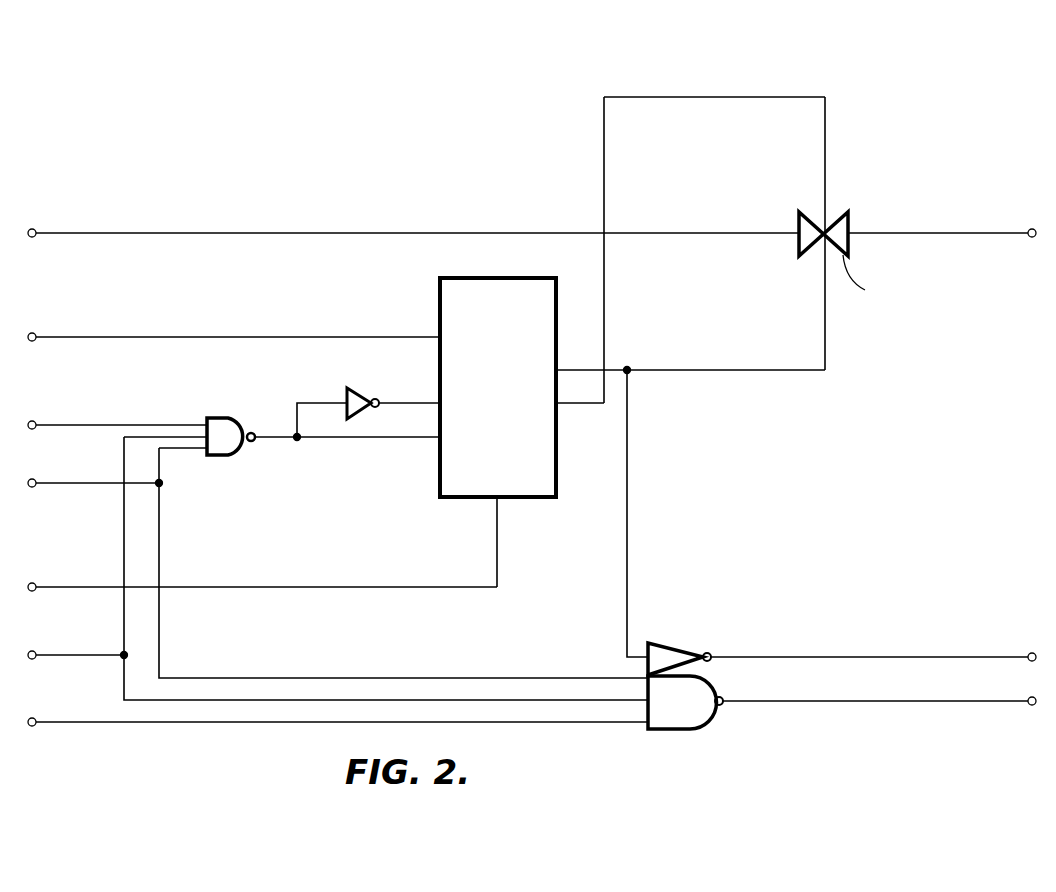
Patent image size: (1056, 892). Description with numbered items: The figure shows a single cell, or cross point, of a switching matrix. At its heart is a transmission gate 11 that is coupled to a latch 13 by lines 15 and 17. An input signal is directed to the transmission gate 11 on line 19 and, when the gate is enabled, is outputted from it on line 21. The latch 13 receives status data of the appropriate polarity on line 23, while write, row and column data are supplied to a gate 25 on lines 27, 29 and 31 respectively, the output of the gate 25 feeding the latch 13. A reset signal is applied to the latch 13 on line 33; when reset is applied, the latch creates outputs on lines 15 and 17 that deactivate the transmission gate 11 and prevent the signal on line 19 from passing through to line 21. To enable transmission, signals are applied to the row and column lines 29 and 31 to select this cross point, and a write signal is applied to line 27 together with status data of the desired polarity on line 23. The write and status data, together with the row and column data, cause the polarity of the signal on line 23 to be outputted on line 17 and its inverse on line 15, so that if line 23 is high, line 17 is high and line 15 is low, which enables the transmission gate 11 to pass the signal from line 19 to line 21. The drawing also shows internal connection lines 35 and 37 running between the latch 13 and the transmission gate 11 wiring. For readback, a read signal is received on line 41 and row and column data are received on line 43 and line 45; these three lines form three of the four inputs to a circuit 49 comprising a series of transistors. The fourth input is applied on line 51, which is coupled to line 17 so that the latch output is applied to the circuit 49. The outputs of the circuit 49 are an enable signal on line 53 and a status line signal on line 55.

The transmission gate 11 is at (845, 212).
The latch 13 is at (498, 387).
The line 15 is at (617, 97).
The line 17 is at (803, 370).
The line 19 is at (267, 232).
The line 21 is at (938, 232).
The line 23 is at (240, 337).
The gate 25 is at (244, 421).
The line 27 is at (125, 425).
The line 29 is at (66, 486).
The line 31 is at (98, 655).
The line 33 is at (90, 587).
The latch output line 35 is at (604, 300).
The latch output line 37 is at (699, 370).
The line 41 is at (146, 722).
The line 43 is at (160, 635).
The line 45 is at (320, 700).
The circuit 49 is at (683, 730).
The line 51 is at (627, 538).
The line 53 is at (938, 657).
The line 55 is at (895, 701).